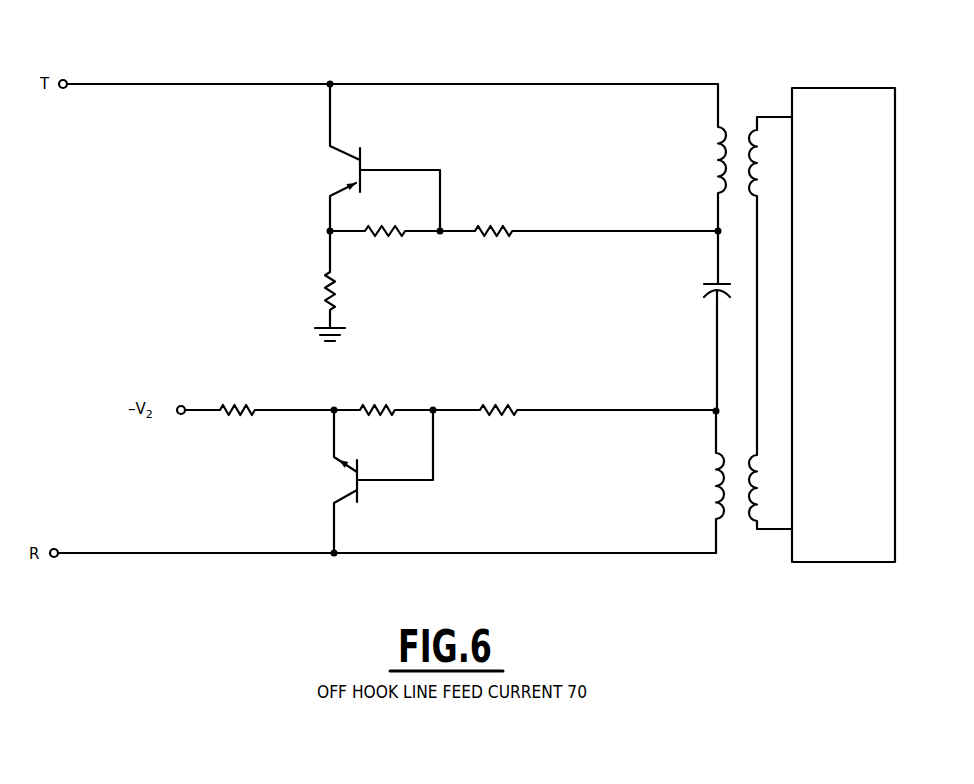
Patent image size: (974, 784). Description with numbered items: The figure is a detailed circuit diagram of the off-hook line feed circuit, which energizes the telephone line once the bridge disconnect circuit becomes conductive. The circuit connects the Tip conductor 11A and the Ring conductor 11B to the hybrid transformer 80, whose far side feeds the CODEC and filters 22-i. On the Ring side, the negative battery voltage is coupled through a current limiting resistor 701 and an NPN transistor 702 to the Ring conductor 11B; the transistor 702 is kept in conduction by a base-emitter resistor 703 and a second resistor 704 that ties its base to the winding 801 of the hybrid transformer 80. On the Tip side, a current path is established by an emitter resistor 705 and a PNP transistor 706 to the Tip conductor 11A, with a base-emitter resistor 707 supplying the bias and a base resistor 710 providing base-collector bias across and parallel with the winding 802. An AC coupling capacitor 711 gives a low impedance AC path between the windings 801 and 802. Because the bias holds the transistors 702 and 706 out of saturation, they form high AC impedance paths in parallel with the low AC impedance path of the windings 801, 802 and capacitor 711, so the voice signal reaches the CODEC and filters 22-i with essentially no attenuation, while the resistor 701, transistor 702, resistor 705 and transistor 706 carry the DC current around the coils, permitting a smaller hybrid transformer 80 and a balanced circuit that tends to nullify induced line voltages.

The Tip conductor 11A is at (212, 83).
The Ring conductor 11B is at (181, 552).
The current limiting resistor 701 is at (236, 402).
The NPN transistor 702 is at (350, 481).
The base-emitter resistor 703 is at (378, 403).
The second resistor 704 is at (498, 403).
The emitter resistor 705 is at (322, 290).
The PNP transistor 706 is at (366, 152).
The base-emitter resistor 707 is at (385, 238).
The base resistor 710 is at (490, 226).
The AC coupling capacitor 711 is at (710, 291).
The hybrid transformer 80 is at (704, 292).
The winding 801 is at (714, 500).
The winding 802 is at (717, 156).
The CODEC and filters 22-i is at (862, 88).